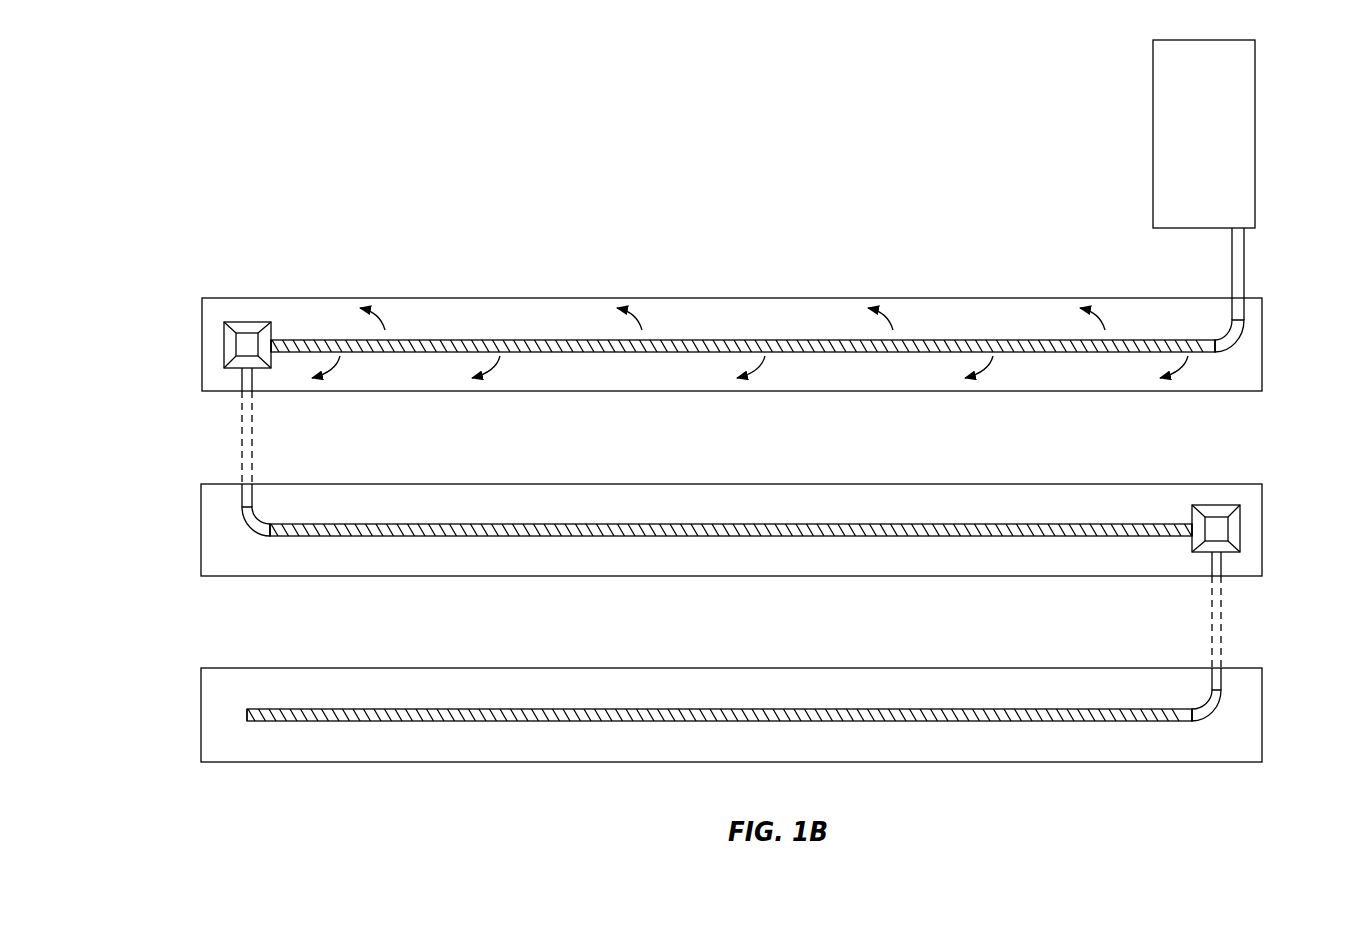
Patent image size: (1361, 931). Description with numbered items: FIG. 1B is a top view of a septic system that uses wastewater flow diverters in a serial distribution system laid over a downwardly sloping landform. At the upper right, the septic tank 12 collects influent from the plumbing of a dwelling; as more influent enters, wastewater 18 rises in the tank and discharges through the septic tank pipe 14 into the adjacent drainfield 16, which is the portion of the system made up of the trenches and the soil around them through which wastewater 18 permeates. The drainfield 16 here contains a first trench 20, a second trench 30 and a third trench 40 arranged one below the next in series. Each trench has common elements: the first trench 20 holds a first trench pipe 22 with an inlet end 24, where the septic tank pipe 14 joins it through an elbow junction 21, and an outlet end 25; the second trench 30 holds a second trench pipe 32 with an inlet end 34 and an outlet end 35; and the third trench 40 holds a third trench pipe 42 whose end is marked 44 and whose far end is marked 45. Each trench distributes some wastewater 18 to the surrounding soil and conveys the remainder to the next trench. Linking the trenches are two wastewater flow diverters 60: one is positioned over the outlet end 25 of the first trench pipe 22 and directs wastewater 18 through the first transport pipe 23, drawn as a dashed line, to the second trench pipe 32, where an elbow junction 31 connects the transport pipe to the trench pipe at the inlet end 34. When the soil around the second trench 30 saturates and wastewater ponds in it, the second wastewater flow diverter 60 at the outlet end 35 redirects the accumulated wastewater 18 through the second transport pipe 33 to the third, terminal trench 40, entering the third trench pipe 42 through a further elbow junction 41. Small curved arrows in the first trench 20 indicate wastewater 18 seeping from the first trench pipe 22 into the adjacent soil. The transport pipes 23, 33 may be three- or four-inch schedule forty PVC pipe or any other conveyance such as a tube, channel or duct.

The septic tank 12 is at (1256, 127).
The septic tank pipe 14 is at (1246, 250).
The drainfield 16 is at (633, 168).
The wastewater 18 is at (648, 330).
The first trench 20 is at (483, 322).
The elbow junction 21 is at (1236, 342).
The first trench pipe 22 is at (955, 343).
The first transport pipe 23 is at (242, 440).
The inlet end 24 is at (1208, 352).
The outlet end 25 is at (272, 347).
The second trench 30 is at (410, 498).
The second elbow fitting 31 is at (248, 522).
The second trench pipe 32 is at (720, 525).
The second transport pipe 33 is at (1222, 625).
The inlet end 34 is at (282, 537).
The outlet end 35 is at (1186, 532).
The third trench 40 is at (530, 692).
The third elbow fitting 41 is at (1218, 704).
The third trench pipe 42 is at (900, 712).
The third conduit inlet end 44 is at (1184, 722).
The fill dirt 45 is at (248, 716).
The wastewater flow diverter 60 is at (246, 347).